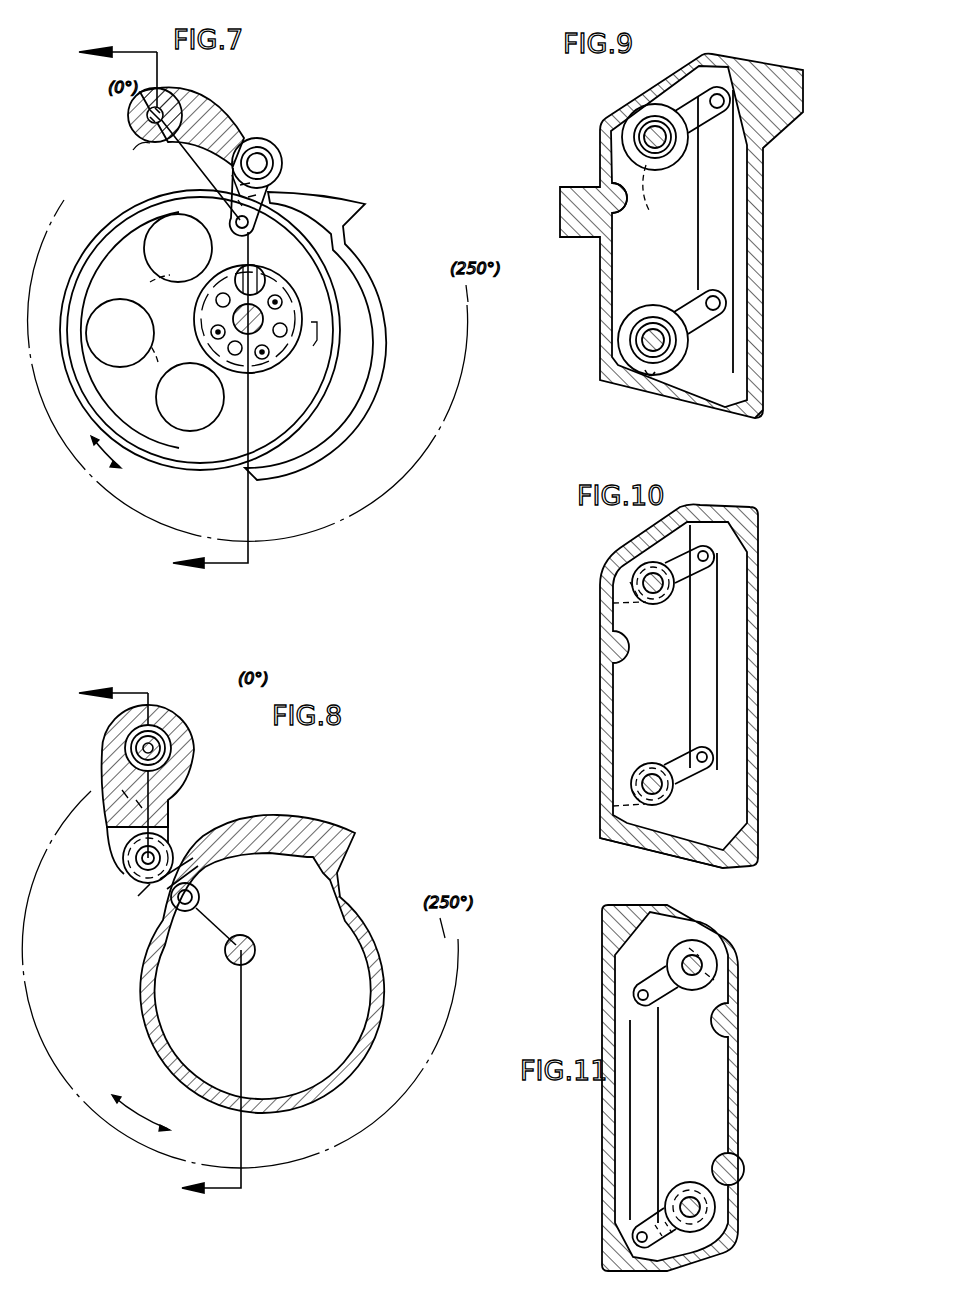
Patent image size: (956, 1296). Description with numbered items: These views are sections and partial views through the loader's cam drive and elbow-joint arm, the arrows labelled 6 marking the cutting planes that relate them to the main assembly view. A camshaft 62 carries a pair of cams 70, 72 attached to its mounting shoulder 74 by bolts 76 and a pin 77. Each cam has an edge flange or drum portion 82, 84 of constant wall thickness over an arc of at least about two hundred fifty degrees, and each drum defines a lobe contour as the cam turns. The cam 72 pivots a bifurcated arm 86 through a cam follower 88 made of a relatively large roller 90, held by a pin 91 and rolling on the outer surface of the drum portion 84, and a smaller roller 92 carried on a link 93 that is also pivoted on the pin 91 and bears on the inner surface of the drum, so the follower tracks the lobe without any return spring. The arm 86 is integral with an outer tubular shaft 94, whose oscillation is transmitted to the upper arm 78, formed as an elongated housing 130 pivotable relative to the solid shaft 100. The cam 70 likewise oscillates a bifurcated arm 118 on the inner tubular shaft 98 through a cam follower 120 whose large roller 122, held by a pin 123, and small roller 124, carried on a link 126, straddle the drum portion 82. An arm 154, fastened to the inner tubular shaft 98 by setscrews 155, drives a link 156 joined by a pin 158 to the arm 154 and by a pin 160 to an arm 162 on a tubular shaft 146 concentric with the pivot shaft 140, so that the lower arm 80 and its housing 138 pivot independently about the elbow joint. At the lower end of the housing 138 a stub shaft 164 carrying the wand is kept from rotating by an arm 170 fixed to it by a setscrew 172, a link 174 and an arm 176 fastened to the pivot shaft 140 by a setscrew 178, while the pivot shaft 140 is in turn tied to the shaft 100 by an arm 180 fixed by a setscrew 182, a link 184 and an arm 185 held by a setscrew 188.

In FIG. 7, the section line 6- 6 is at (152, 309).
In FIG. 8, the section line 6- 6 is at (148, 942).
In FIG. 7, the camshaft 62 is at (258, 316).
In FIG. 8, the camshaft 62 is at (253, 958).
In FIG. 7, the cam 70 is at (114, 208).
In FIG. 8, the cam 72 is at (288, 818).
In FIG. 7, the mounting shoulder 74 is at (228, 240).
In FIG. 7, the bolts 76 is at (216, 331).
In FIG. 7, the pin 77 is at (260, 277).
In FIG. 9, the upper arm 78 is at (764, 361).
In FIG. 10, the upper arm 78 is at (759, 728).
In FIG. 11, the lower arm 80 is at (738, 1078).
In FIG. 7, the drum portion 82 is at (158, 462).
In FIG. 8, the drum portion 84 is at (160, 1040).
In FIG. 8, the bifurcated arm 86 is at (167, 812).
In FIG. 8, the cam follower 88 is at (143, 897).
In FIG. 8, the roller 90 is at (176, 850).
In FIG. 8, the pin 91 is at (150, 861).
In FIG. 8, the roller 92 is at (183, 915).
In FIG. 8, the link 93 is at (199, 893).
In FIG. 8, the tubular shaft 94 is at (196, 759).
In FIG. 7, the inner tubular shaft 98 is at (130, 156).
In FIG. 8, the inner tubular shaft 98 is at (168, 746).
In FIG. 7, the solid shaft 100 is at (147, 113).
In FIG. 8, the solid shaft 100 is at (163, 740).
In FIG. 9, the solid shaft 100 is at (665, 170).
In FIG. 10, the solid shaft 100 is at (658, 610).
In FIG. 7, the bifurcated actuating arm 118 is at (214, 112).
In FIG. 7, the cam follower 120 is at (282, 178).
In FIG. 7, the roller 122 is at (271, 146).
In FIG. 7, the pin 123 is at (266, 160).
In FIG. 7, the roller 124 is at (236, 214).
In FIG. 7, the link 126 is at (232, 176).
In FIG. 9, the upper arm housing 130 is at (764, 396).
In FIG. 10, the upper arm housing 130 is at (596, 748).
In FIG. 11, the lower arm housing 138 is at (732, 1146).
In FIG. 9, the pivot shaft 140 is at (653, 313).
In FIG. 10, the pivot shaft 140 is at (658, 808).
In FIG. 11, the pivot shaft 140 is at (709, 962).
In FIG. 9, the tubular shaft 146 is at (652, 368).
In FIG. 9, the arm 154 is at (693, 62).
In FIG. 9, the setscrews 155 is at (606, 142).
In FIG. 9, the link 156 is at (728, 245).
In FIG. 9, the pin 158 is at (722, 94).
In FIG. 9, the pin 160 is at (722, 303).
In FIG. 9, the arm 162 is at (700, 326).
In FIG. 11, the stub shaft 164 is at (712, 1202).
In FIG. 11, the arm 170 is at (640, 1232).
In FIG. 7, the setscrew 172 is at (333, 194).
In FIG. 11, the setscrew 172 is at (716, 1218).
In FIG. 11, the link 174 is at (654, 1110).
In FIG. 11, the arm 176 is at (668, 1003).
In FIG. 11, the setscrew 178 is at (705, 945).
In FIG. 10, the arm 180 is at (690, 786).
In FIG. 10, the setscrew 182 is at (613, 806).
In FIG. 10, the link 184 is at (712, 651).
In FIG. 10, the arm 185 is at (688, 522).
In FIG. 10, the setscrew 188 is at (613, 603).